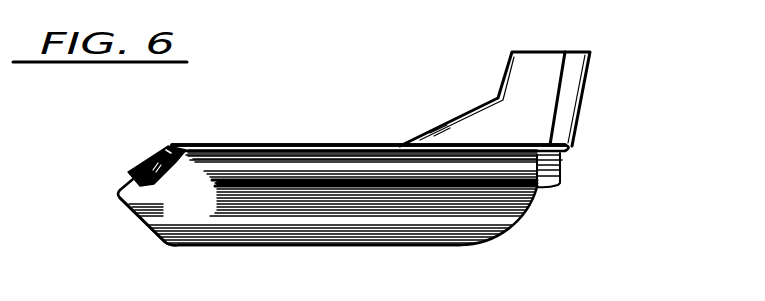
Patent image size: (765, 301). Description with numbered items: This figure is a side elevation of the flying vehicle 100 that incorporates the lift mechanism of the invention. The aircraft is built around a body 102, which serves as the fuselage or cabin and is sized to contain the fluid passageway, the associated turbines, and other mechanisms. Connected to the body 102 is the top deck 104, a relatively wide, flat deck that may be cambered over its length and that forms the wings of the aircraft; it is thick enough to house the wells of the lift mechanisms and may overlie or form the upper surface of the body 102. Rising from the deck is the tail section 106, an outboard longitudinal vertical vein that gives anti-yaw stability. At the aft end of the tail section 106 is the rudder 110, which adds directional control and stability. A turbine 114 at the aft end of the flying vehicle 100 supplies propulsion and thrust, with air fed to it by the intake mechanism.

The flying vehicle 100 is at (352, 94).
The body 102 is at (192, 218).
The top deck 104 is at (222, 146).
The tail section 106 is at (543, 62).
The rudder 110 is at (570, 97).
The turbine 114 is at (547, 172).